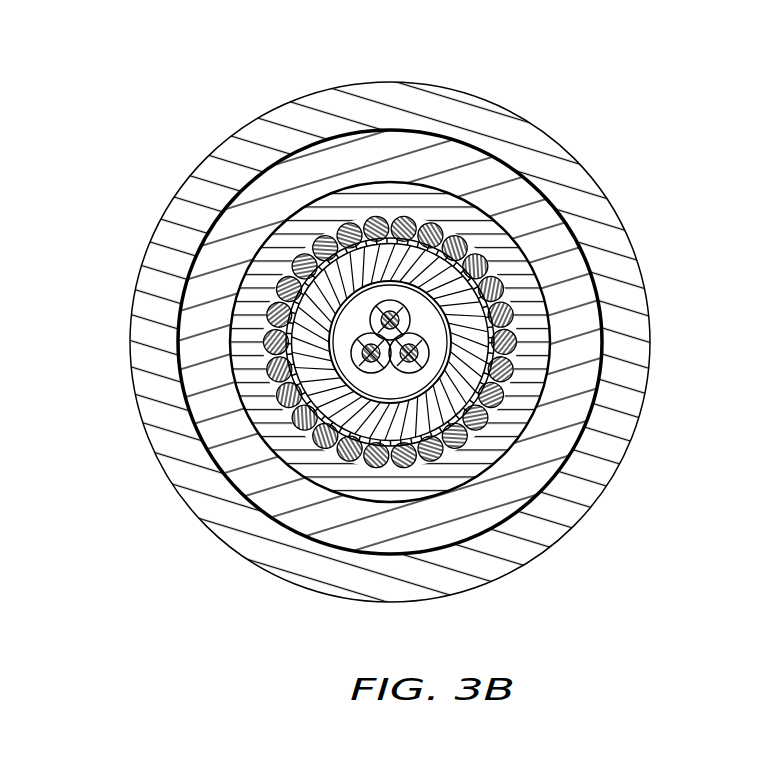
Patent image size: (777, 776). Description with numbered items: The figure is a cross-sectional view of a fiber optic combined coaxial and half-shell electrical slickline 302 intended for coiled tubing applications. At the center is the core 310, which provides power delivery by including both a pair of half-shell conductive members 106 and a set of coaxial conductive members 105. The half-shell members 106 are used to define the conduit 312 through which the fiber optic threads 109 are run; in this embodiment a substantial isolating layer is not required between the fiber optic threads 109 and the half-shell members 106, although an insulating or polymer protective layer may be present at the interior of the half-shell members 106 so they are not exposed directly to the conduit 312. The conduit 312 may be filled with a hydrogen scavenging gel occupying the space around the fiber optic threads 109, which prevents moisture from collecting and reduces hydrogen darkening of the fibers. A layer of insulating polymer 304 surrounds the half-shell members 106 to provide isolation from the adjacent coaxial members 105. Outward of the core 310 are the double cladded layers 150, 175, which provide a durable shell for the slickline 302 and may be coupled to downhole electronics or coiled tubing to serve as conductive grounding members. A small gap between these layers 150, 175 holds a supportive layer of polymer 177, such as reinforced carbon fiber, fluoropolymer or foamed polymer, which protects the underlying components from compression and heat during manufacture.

The fiber optic combined coaxial and half-shell electrical slickline 302 is at (602, 48).
The half-shell conductive members 106 is at (380, 267).
The fiber optic threads 109 is at (413, 317).
The cladded layer 175 is at (617, 308).
The supportive layer of polymer 177 is at (208, 217).
The cladded layer 150 is at (590, 396).
The coaxial conductive members 105 is at (330, 342).
The layer of insulating polymer 304 is at (300, 368).
The core 310 is at (290, 450).
The conduit 312 is at (378, 383).